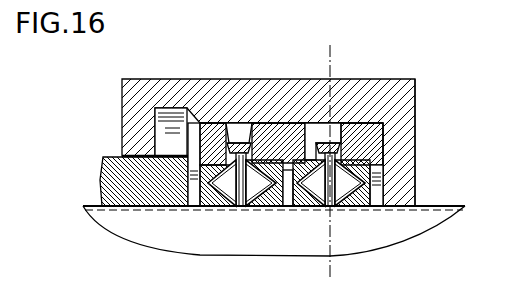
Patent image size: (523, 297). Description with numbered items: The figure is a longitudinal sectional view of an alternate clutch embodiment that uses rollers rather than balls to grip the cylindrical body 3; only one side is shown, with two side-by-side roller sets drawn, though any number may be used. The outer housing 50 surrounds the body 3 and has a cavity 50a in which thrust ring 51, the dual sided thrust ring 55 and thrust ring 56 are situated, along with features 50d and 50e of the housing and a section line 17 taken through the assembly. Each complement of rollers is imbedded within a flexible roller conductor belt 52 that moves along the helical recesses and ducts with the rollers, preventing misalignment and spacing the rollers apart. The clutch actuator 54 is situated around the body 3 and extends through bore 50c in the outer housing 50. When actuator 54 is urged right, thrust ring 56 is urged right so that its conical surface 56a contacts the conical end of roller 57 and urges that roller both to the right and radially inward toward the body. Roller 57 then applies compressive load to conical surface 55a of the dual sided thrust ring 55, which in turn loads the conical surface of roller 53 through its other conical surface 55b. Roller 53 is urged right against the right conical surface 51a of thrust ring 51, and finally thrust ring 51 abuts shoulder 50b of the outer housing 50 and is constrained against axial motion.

The body 3 is at (424, 236).
The section line 17 is at (330, 45).
The outer housing 50 is at (406, 75).
The cavity 50a is at (335, 120).
The shoulder 50b is at (385, 133).
The bore 50c is at (140, 157).
The housing outer wall 50d is at (416, 92).
The housing bottom portion 50e is at (402, 195).
The thrust ring 51 is at (366, 120).
The right conical surface 51a is at (378, 160).
The flexible roller conductor belt 52 is at (249, 138).
The roller 53 is at (340, 207).
The clutch actuator 54 is at (177, 147).
The dual sided thrust ring 55 is at (287, 130).
The conical surface 55a is at (270, 205).
The conical surface 55b is at (303, 204).
The thrust ring 56 is at (205, 128).
The conical surface 56a is at (183, 183).
The roller 57 is at (241, 193).